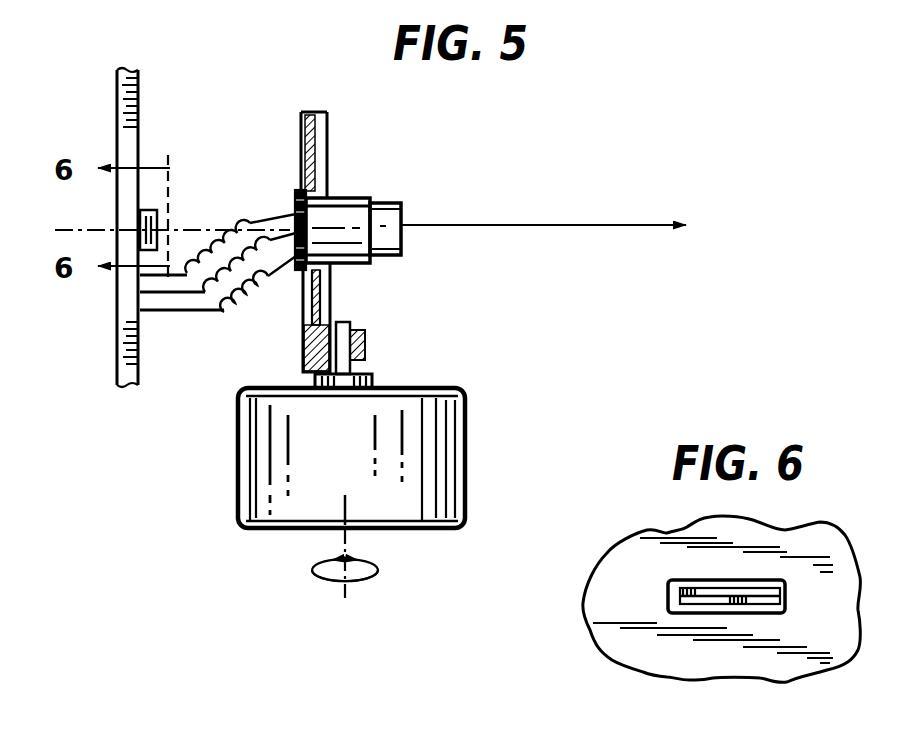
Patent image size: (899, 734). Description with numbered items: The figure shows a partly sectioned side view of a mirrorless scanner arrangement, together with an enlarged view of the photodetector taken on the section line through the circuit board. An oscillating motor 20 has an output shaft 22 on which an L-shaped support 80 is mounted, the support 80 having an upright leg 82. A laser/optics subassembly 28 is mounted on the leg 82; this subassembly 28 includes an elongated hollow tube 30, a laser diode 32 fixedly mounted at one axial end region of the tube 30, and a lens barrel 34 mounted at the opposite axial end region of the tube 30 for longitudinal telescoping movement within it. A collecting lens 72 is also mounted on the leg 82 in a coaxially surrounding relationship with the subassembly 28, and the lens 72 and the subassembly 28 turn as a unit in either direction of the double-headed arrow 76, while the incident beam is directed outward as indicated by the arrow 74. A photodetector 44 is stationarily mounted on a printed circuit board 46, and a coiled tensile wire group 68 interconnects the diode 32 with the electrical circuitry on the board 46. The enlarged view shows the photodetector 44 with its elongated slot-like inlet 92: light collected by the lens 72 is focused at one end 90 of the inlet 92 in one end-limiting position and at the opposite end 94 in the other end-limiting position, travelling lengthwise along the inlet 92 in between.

In FIG. 5, the oscillating motor 20 is at (465, 416).
In FIG. 5, the output shaft 22 is at (346, 322).
In FIG. 5, the laser/optics subassembly 28 is at (348, 226).
In FIG. 5, the elongated hollow tube 30 is at (360, 182).
In FIG. 5, the laser diode 32 is at (298, 190).
In FIG. 5, the lens barrel 34 is at (398, 203).
In FIG. 5, the photodetector 44 is at (157, 220).
In FIG. 6, the photodetector 44 is at (790, 583).
In FIG. 5, the printed circuit board 46 is at (138, 103).
In FIG. 6, the printed circuit board 46 is at (826, 668).
In FIG. 5, the coiled tensile wire group 68 is at (258, 318).
In FIG. 5, the collecting lens 72 is at (336, 221).
In FIG. 5, the direction of motion 74 is at (490, 212).
In FIG. 5, the double-headed arrow 76 is at (350, 578).
In FIG. 5, the support 80 is at (365, 348).
In FIG. 5, the upright leg 82 is at (312, 112).
In FIG. 6, the end of inlet 90 is at (788, 612).
In FIG. 6, the slot-like inlet 92 is at (723, 598).
In FIG. 6, the opposite end of inlet 94 is at (668, 591).